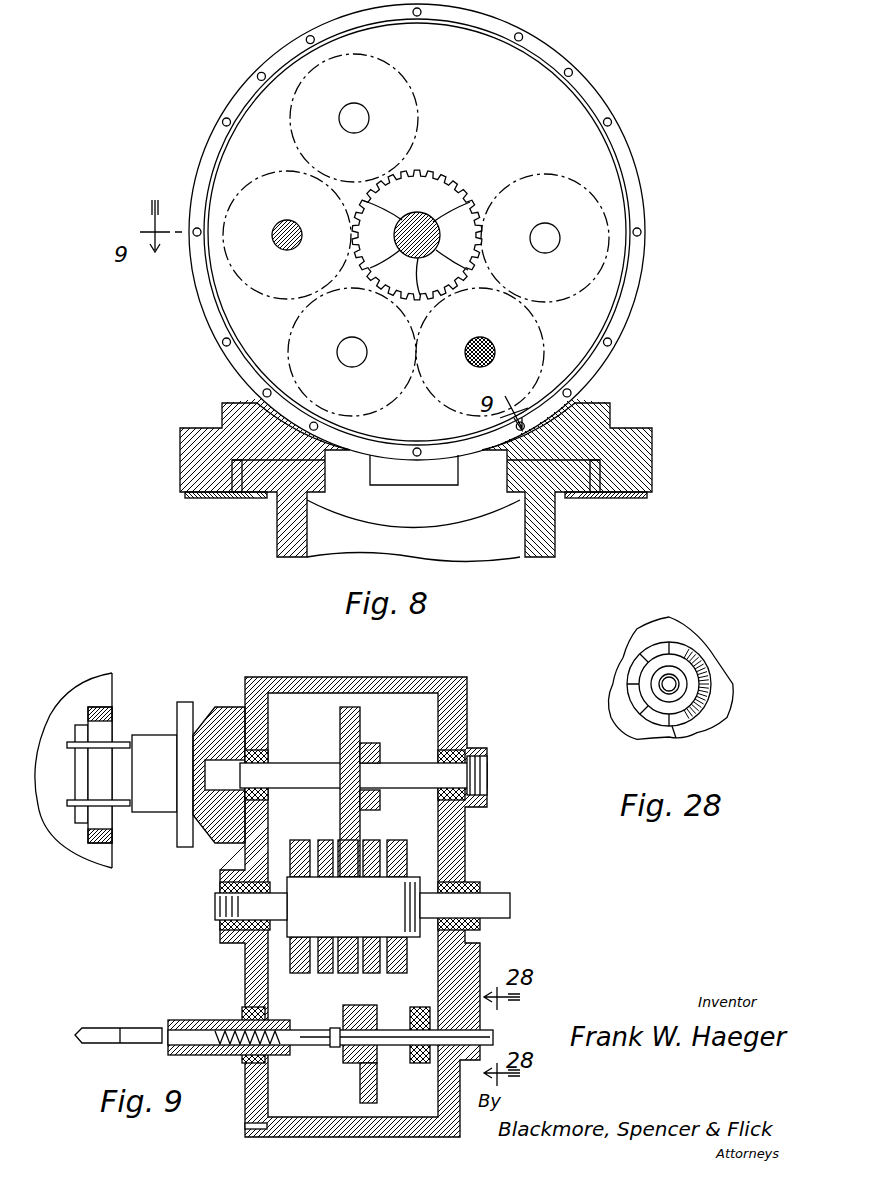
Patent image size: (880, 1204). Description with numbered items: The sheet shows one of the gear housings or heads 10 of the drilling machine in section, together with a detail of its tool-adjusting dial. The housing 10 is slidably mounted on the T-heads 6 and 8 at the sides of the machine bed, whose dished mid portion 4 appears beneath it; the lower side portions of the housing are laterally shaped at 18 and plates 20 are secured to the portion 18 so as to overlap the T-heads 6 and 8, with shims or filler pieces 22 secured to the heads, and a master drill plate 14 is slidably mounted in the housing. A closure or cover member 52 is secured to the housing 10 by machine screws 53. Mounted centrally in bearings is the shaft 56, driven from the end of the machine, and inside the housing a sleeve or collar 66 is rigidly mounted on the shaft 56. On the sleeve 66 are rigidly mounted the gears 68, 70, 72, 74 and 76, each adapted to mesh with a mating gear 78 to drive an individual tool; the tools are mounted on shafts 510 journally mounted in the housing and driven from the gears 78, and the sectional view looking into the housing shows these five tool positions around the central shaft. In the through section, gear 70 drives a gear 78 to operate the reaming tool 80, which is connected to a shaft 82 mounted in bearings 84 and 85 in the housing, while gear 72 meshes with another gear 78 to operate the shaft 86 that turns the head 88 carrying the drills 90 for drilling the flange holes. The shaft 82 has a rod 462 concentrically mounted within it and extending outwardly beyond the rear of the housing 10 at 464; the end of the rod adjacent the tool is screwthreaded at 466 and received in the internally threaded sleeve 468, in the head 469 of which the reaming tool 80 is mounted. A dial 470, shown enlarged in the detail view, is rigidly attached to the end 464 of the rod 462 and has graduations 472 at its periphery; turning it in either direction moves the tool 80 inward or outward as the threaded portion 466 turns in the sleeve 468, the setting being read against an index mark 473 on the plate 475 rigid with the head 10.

In FIG. 8, the dished mid portion 4 is at (437, 522).
In FIG. 8, the T-head 6 is at (276, 484).
In FIG. 8, the T-head 8 is at (550, 486).
In FIG. 8, the gear housing 10 is at (636, 208).
In FIG. 9, the gear housing 10 is at (455, 1126).
In FIG. 9, the master drill plate 14 is at (115, 858).
In FIG. 8, the laterally shaped lower side portion 18 is at (200, 440).
In FIG. 8, the plate 20 is at (192, 500).
In FIG. 8, the shim or filler piece 22 is at (236, 482).
In FIG. 9, the closure or cover member 52 is at (250, 1106).
In FIG. 9, the machine screw 53 is at (252, 1130).
In FIG. 8, the shaft 56 is at (428, 226).
In FIG. 9, the shaft 56 is at (504, 896).
In FIG. 8, the sleeve or collar 66 is at (420, 218).
In FIG. 9, the sleeve or collar 66 is at (398, 888).
In FIG. 9, the gear 68 is at (443, 856).
In FIG. 9, the gear 70 is at (380, 956).
In FIG. 9, the gear 72 is at (345, 968).
In FIG. 9, the gear 74 is at (323, 968).
In FIG. 9, the gear 76 is at (292, 975).
In FIG. 8, the mating gear 78 is at (300, 121).
In FIG. 9, the mating gear 78 is at (357, 720).
In FIG. 9, the reaming tool 80 is at (100, 1042).
In FIG. 8, the shaft 82 is at (489, 349).
In FIG. 9, the shaft 82 is at (328, 1050).
In FIG. 9, the bearing 84 is at (250, 1010).
In FIG. 9, the bearing 85 is at (452, 1023).
In FIG. 8, the shaft 86 is at (281, 227).
In FIG. 9, the shaft 86 is at (298, 763).
In FIG. 9, the head 88 is at (207, 722).
In FIG. 9, the drill 90 is at (112, 746).
In FIG. 9, the rod 462 is at (400, 1045).
In FIG. 28, the rod end 464 is at (662, 682).
In FIG. 9, the rod end 464 is at (495, 1030).
In FIG. 9, the screwthreaded portion 466 is at (295, 1046).
In FIG. 9, the sleeve 468 is at (226, 1026).
In FIG. 9, the head 469 is at (170, 1022).
In FIG. 28, the dial 470 is at (672, 664).
In FIG. 9, the dial 470 is at (492, 1040).
In FIG. 28, the graduations 472 is at (703, 660).
In FIG. 28, the index mark 473 is at (678, 728).
In FIG. 28, the plate 475 is at (622, 708).
In FIG. 9, the plate 475 is at (470, 1000).
In FIG. 8, the tool shaft 510 is at (355, 107).